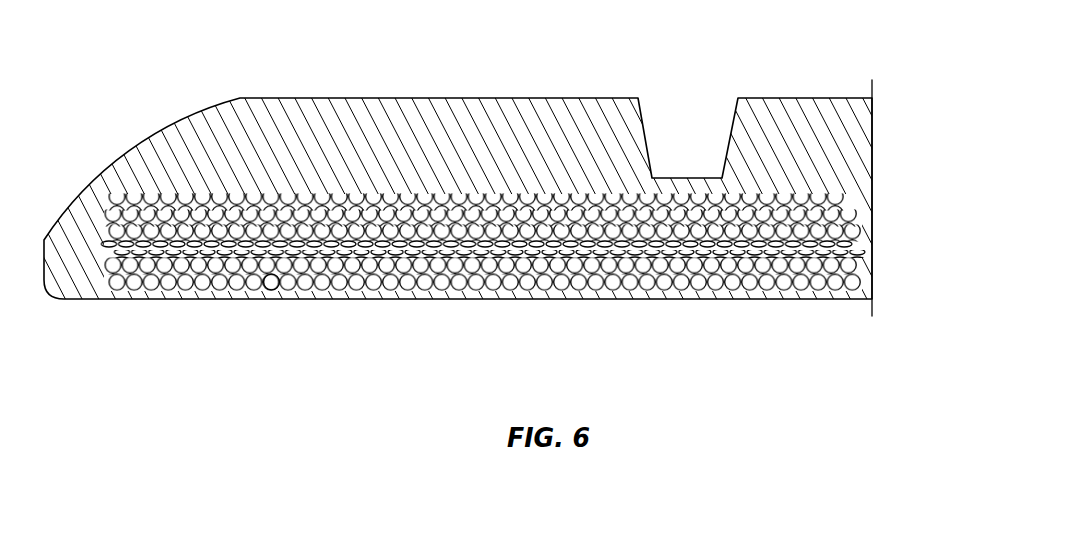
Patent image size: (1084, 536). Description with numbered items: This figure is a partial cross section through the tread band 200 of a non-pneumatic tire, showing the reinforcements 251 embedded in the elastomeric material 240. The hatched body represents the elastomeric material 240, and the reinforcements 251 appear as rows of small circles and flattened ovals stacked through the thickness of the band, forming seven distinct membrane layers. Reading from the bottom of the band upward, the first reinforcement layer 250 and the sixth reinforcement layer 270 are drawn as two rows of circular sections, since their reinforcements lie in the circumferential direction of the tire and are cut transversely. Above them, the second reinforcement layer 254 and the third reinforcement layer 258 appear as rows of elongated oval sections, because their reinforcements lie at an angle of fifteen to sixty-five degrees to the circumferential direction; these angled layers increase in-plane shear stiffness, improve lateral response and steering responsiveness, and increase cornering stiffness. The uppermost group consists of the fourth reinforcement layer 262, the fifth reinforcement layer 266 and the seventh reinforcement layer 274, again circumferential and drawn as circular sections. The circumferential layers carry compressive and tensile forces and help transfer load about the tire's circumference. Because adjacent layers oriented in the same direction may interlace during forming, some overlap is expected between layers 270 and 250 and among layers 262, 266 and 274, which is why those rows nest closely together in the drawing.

The tread band 200 is at (495, 185).
The elastomeric material 240 is at (507, 293).
The reinforcements 251 is at (271, 291).
The seventh reinforcement layer 274 is at (839, 195).
The fifth reinforcement layer 266 is at (849, 210).
The fourth reinforcement layer 262 is at (853, 203).
The third reinforcement layer 258 is at (856, 243).
The second reinforcement layer 254 is at (857, 254).
The first reinforcement layer 250 is at (858, 269).
The sixth reinforcement layer 270 is at (851, 290).